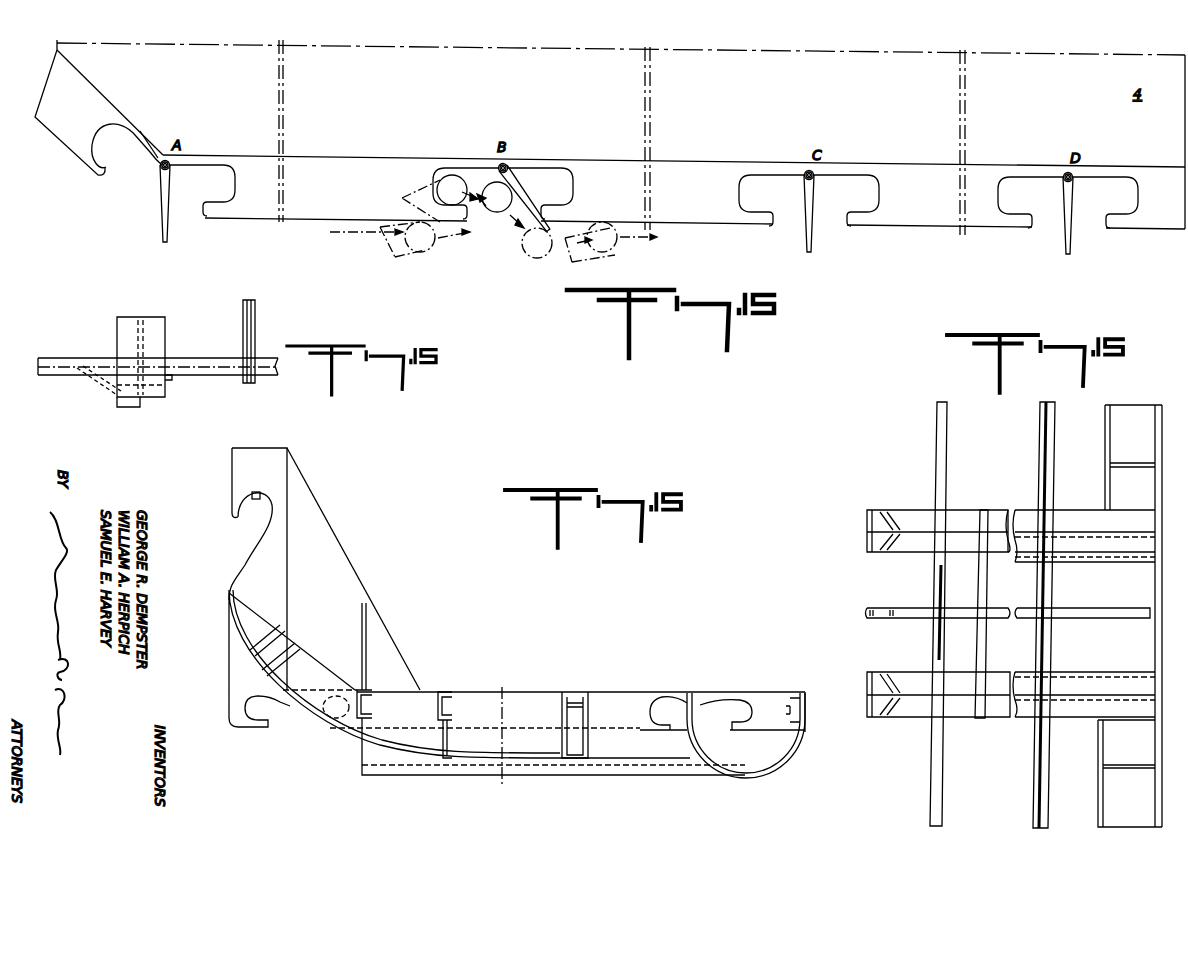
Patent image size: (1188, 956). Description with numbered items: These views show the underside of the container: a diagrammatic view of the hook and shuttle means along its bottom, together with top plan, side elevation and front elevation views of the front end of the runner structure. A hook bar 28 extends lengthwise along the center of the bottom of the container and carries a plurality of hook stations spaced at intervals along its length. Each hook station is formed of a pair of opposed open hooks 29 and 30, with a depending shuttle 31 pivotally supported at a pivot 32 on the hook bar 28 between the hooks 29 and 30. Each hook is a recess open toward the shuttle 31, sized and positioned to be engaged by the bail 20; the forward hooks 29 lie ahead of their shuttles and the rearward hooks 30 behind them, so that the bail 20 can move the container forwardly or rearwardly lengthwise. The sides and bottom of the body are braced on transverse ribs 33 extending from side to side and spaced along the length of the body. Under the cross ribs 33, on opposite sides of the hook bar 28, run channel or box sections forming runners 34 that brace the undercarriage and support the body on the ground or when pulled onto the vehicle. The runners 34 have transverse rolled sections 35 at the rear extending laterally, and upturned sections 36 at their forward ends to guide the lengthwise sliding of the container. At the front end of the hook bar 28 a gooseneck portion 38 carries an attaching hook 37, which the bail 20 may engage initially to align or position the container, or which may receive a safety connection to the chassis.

In FIG. 15, the bail 20 is at (423, 250).
In FIG. 15, the hook bar 28 is at (695, 202).
In FIG. 18, the hook bar 28 is at (256, 334).
In FIG. 17, the hook bar 28 is at (612, 700).
In FIG. 16, the hook bar 28 is at (971, 610).
In FIG. 15, the forward hook 29 is at (128, 135).
In FIG. 15, the rearward hook 30 is at (226, 188).
In FIG. 15, the shuttle 31 is at (167, 228).
In FIG. 15, the pivot 32 is at (170, 170).
In FIG. 18, the transverse rib 33 is at (57, 364).
In FIG. 17, the transverse rib 33 is at (366, 708).
In FIG. 16, the transverse rib 33 is at (939, 772).
In FIG. 18, the runner 34 is at (140, 406).
In FIG. 17, the runner 34 is at (470, 778).
In FIG. 16, the runner 34 is at (1066, 512).
In FIG. 17, the transverse rolled section 35 is at (786, 754).
In FIG. 16, the transverse rolled section 35 is at (1160, 488).
In FIG. 18, the upturned section 36 is at (165, 330).
In FIG. 17, the upturned section 36 is at (230, 640).
In FIG. 16, the upturned section 36 is at (875, 510).
In FIG. 17, the attaching hook 37 is at (258, 492).
In FIG. 17, the gooseneck portion 38 is at (238, 453).